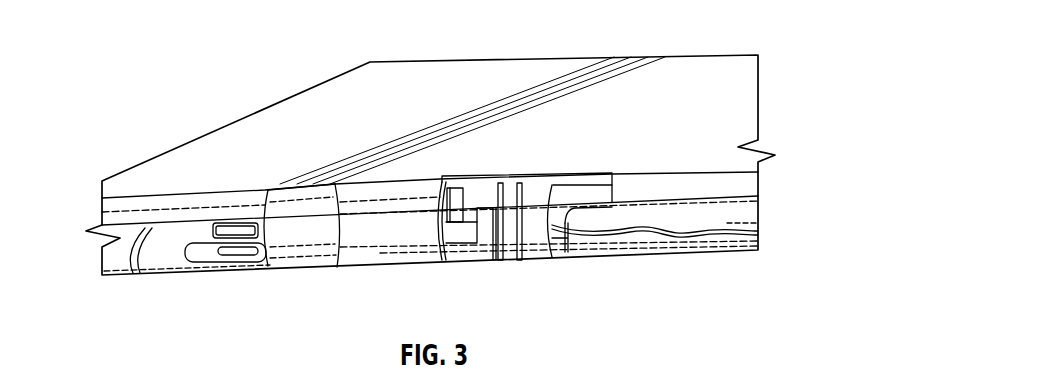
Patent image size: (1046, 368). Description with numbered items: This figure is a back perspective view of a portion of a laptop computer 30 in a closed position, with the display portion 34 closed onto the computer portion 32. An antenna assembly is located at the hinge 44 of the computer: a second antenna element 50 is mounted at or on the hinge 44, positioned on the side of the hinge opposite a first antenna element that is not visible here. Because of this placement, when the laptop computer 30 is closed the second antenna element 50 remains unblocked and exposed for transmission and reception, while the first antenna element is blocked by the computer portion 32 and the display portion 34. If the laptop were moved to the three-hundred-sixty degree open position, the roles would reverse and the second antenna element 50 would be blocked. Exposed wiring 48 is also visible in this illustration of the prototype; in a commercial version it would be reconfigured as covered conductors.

The laptop computer 30 is at (237, 60).
The computer portion 32 is at (750, 183).
The display portion 34 is at (732, 116).
The hinge 44 is at (357, 242).
The exposed wiring 48 is at (750, 224).
The second antenna element 50 is at (510, 243).